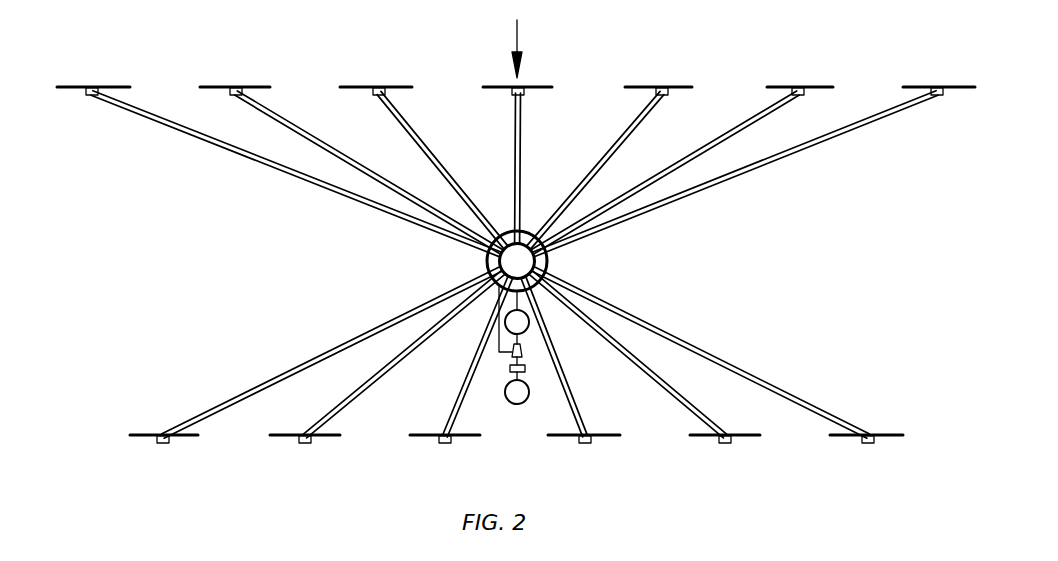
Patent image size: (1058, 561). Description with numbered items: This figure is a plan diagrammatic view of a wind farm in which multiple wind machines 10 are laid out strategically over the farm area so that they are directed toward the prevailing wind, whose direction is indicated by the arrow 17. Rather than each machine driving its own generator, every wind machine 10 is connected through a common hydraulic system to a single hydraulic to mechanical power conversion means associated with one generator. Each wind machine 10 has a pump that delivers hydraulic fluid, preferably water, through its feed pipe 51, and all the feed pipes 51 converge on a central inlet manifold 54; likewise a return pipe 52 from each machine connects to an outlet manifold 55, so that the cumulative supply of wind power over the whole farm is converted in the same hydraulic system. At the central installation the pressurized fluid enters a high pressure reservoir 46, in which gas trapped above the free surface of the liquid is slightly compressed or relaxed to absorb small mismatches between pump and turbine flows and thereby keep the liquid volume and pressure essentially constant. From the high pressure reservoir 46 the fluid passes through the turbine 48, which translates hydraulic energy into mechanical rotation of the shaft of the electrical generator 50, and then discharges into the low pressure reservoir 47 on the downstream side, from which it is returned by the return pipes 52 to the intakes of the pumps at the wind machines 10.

The wind machine 10 is at (119, 85).
The arrow 17 is at (517, 32).
The high pressure reservoir 46 is at (547, 283).
The low pressure reservoir 47 is at (510, 405).
The turbine 48 is at (522, 352).
The electrical generator 50 is at (525, 368).
The feed pipe 51 is at (514, 265).
The return pipe 52 is at (268, 114).
The inlet manifold 54 is at (506, 232).
The outlet manifold 55 is at (533, 231).